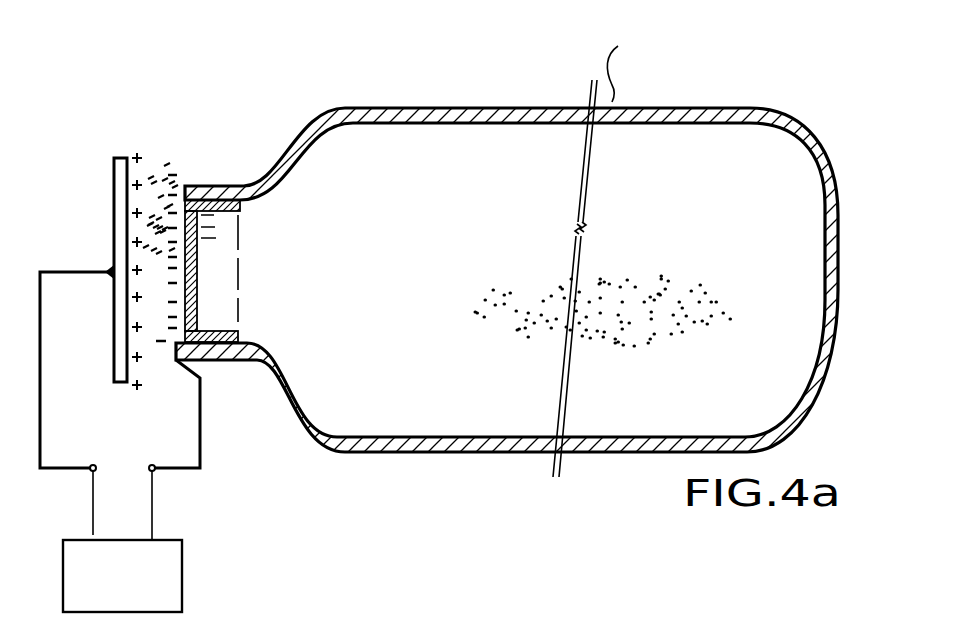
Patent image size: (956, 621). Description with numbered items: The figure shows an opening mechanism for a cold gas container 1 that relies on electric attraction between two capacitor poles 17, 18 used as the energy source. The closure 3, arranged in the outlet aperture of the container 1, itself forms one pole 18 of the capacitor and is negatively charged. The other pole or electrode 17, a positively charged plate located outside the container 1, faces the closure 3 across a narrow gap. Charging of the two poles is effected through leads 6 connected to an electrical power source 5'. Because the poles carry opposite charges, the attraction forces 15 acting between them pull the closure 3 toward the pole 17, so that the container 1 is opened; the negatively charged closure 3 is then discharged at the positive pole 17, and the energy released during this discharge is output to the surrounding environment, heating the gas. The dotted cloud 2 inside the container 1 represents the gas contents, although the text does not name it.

The container 1 is at (568, 100).
The gas or particles 2 is at (545, 284).
The closure 3 is at (204, 247).
The electrical power source 5' is at (147, 541).
The leads 6 is at (38, 456).
The attraction forces 15 is at (153, 273).
The pole 17 is at (115, 188).
The pole 18 is at (173, 190).